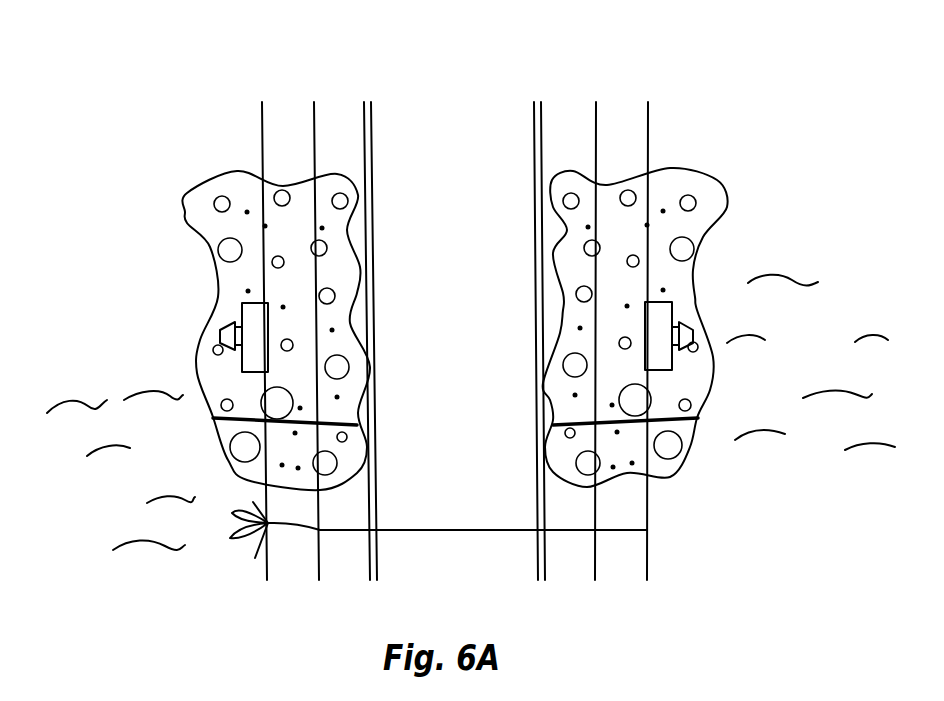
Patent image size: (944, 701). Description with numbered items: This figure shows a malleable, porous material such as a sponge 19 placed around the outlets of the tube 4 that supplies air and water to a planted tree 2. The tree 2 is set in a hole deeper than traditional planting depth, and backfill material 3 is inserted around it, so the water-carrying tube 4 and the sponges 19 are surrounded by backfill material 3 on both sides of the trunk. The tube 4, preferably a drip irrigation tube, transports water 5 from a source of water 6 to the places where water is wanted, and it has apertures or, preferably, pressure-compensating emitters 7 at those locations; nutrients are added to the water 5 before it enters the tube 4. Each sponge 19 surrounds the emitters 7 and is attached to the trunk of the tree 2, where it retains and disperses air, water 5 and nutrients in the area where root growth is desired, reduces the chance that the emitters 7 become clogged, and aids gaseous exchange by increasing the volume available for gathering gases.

The tree 2 is at (543, 125).
The backfill material 3 is at (131, 489).
The tube 4 is at (262, 148).
The water 5 is at (287, 118).
The source of water 6 is at (364, 316).
The pressure-compensating emitters 7 is at (255, 362).
The sponge 19 is at (197, 210).